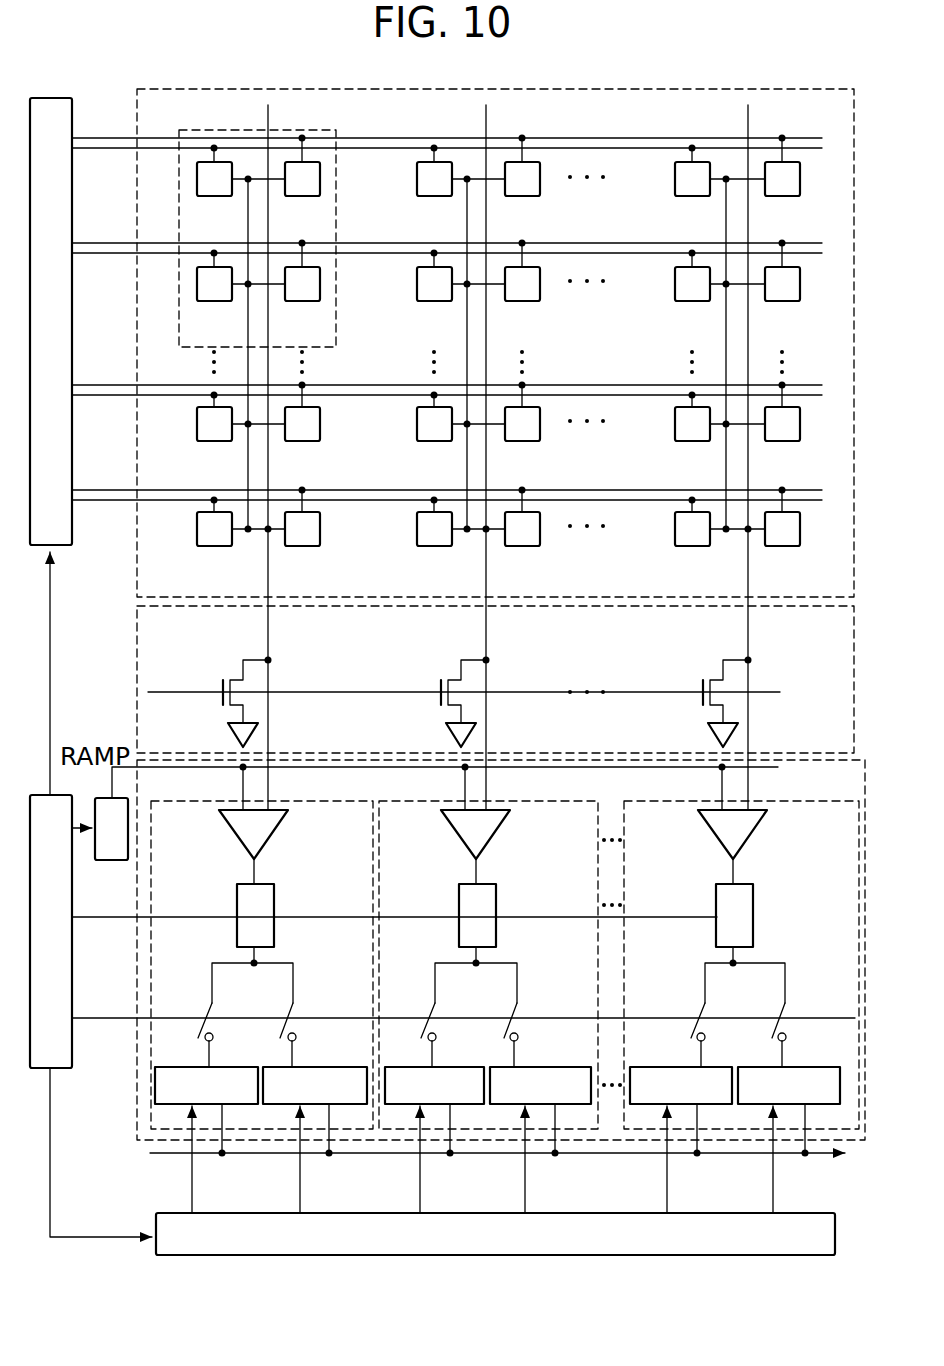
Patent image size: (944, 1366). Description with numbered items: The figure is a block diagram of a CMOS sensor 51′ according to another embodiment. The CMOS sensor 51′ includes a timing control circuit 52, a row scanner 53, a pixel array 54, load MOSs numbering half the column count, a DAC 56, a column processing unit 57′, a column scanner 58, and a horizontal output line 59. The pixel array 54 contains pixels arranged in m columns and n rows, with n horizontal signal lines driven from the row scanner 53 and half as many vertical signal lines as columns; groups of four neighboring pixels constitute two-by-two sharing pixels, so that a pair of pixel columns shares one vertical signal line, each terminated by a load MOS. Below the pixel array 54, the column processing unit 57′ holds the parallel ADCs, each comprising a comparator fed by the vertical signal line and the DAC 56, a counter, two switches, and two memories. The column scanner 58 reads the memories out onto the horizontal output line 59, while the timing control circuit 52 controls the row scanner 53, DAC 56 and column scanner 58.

The CMOS sensor 51′ is at (728, 82).
The timing control circuit 52 is at (72, 1062).
The row scanner 53 is at (53, 97).
The pixel array 54 is at (616, 88).
The DAC 56 is at (113, 862).
The column processing unit 57′ is at (138, 1128).
The column scanner 58 is at (796, 1212).
The horizontal output line 59 is at (597, 1158).